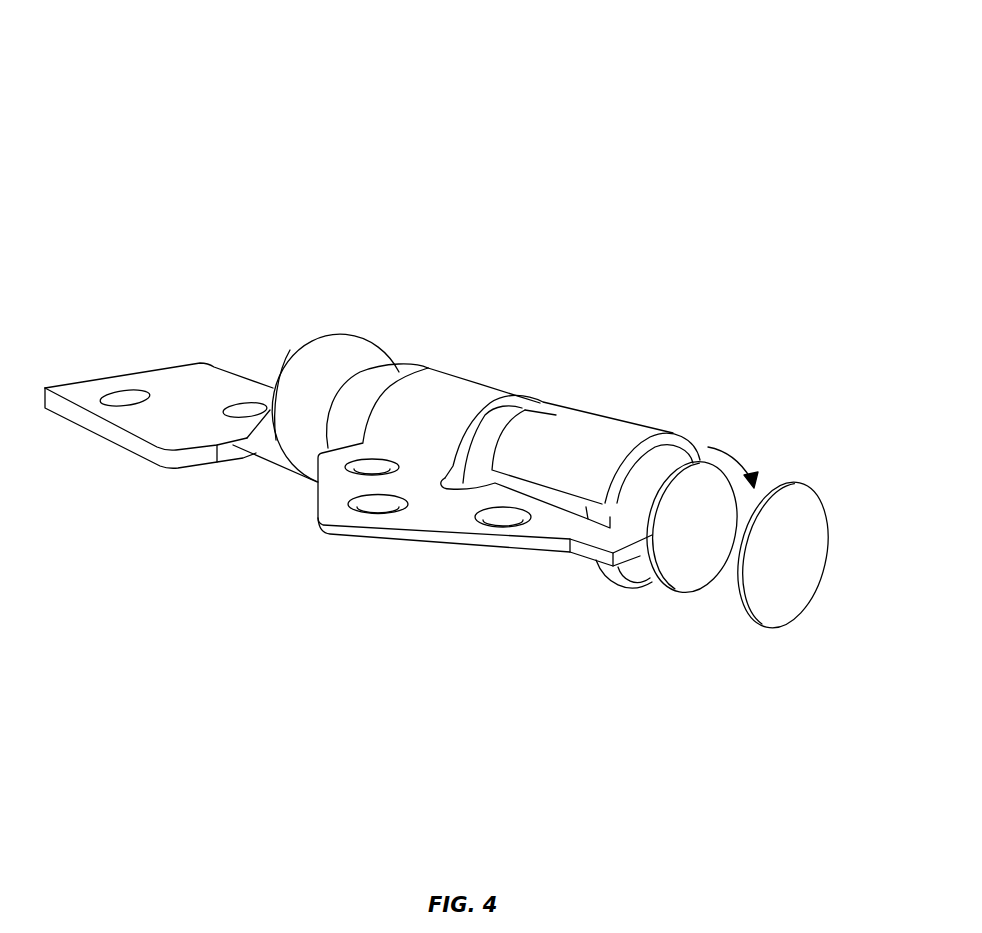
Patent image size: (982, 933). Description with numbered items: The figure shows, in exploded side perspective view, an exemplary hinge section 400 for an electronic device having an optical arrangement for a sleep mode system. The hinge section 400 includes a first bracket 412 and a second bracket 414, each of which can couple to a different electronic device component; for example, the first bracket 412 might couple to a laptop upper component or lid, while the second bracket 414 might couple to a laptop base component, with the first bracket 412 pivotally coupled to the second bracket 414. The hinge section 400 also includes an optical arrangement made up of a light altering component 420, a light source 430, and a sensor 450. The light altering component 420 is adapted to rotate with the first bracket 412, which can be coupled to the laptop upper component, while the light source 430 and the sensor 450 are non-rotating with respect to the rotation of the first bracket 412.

The hinge section 400 is at (640, 64).
The first bracket 412 is at (387, 543).
The second bracket 414 is at (167, 467).
The light altering component 420 is at (677, 593).
The light source 430 is at (678, 465).
The sensor 450 is at (762, 627).